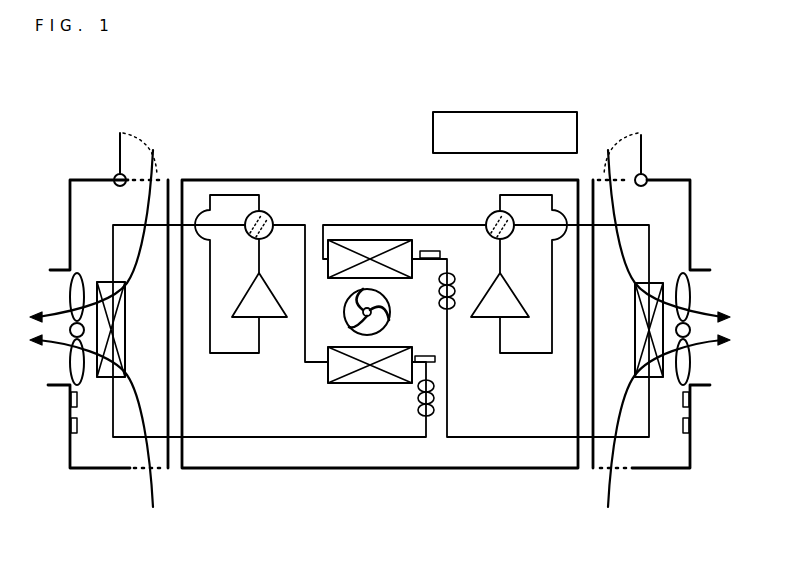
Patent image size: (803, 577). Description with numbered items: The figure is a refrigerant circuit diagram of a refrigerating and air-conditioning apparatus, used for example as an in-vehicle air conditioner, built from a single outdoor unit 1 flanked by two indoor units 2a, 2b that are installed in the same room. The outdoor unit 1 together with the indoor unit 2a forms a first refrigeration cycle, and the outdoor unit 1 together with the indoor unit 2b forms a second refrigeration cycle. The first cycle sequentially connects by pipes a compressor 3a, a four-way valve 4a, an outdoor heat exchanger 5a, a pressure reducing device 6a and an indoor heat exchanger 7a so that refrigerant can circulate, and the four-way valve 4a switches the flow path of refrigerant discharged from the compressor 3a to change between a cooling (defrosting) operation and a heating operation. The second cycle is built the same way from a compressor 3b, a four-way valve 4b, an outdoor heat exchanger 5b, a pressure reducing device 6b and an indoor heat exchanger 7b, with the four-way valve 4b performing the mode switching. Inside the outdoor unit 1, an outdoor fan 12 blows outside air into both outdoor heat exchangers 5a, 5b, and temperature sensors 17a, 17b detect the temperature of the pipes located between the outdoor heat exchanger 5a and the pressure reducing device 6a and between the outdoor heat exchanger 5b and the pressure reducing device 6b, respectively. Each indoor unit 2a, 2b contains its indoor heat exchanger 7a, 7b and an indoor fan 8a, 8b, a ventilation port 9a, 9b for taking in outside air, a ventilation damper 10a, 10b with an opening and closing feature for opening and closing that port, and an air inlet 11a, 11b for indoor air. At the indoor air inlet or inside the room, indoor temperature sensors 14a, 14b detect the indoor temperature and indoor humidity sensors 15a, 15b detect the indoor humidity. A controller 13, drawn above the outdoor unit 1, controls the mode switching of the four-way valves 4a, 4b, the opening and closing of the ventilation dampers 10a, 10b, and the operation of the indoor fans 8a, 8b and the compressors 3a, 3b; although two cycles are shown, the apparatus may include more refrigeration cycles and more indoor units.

The outdoor unit 1 is at (333, 179).
The indoor unit 2a is at (70, 210).
The indoor unit 2b is at (690, 212).
The compressor 3a is at (248, 298).
The compressor 3b is at (506, 300).
The four-way valve 4a is at (271, 216).
The four-way valve 4b is at (498, 212).
The outdoor heat exchanger 5a is at (373, 383).
The outdoor heat exchanger 5b is at (372, 250).
The pressure reducing device 6a is at (420, 408).
The pressure reducing device 6b is at (455, 291).
The indoor heat exchanger 7a is at (108, 282).
The indoor heat exchanger 7b is at (650, 283).
The indoor fan 8a is at (70, 274).
The indoor fan 8b is at (688, 302).
The ventilation port 9a is at (165, 178).
The ventilation port 9b is at (645, 185).
The ventilation damper 10a is at (118, 163).
The ventilation damper 10b is at (645, 163).
The air inlet 11a is at (137, 470).
The air inlet 11b is at (624, 470).
The outdoor fan 12 is at (347, 322).
The controller 13 is at (568, 135).
The indoor temperature sensor 14a is at (71, 399).
The indoor temperature sensor 14b is at (690, 399).
The indoor humidity sensor 15a is at (71, 425).
The indoor humidity sensor 15b is at (690, 425).
The temperature sensor 17a is at (426, 357).
The temperature sensor 17b is at (430, 250).